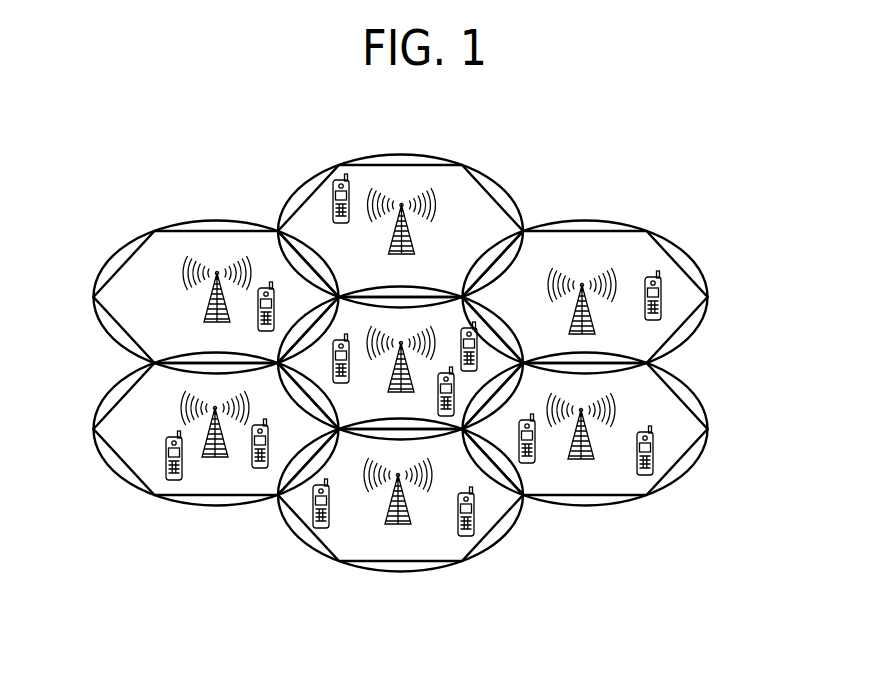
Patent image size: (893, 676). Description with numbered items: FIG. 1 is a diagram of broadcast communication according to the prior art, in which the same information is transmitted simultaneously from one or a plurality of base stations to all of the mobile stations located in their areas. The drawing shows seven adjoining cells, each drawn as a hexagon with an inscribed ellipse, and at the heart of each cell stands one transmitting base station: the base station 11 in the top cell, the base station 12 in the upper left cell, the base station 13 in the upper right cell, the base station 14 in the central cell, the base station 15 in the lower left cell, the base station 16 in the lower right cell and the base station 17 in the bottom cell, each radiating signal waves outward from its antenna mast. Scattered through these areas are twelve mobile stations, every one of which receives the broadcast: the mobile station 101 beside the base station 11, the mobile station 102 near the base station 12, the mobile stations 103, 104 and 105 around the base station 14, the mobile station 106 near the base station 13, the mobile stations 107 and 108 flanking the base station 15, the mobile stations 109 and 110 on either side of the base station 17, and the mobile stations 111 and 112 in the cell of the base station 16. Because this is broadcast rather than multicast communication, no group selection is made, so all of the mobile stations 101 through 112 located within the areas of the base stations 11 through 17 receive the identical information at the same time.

The base station 11 is at (402, 205).
The base station 12 is at (217, 273).
The base station 13 is at (582, 285).
The base station 14 is at (389, 377).
The base station 15 is at (214, 457).
The base station 16 is at (587, 452).
The base station 17 is at (411, 512).
The mobile station 101 is at (337, 180).
The mobile station 102 is at (271, 287).
The mobile station 103 is at (340, 383).
The mobile station 104 is at (444, 372).
The mobile station 105 is at (478, 345).
The mobile station 106 is at (653, 277).
The mobile station 107 is at (173, 480).
The mobile station 108 is at (260, 468).
The mobile station 109 is at (325, 528).
The mobile station 110 is at (475, 520).
The mobile station 111 is at (535, 447).
The mobile station 112 is at (655, 455).